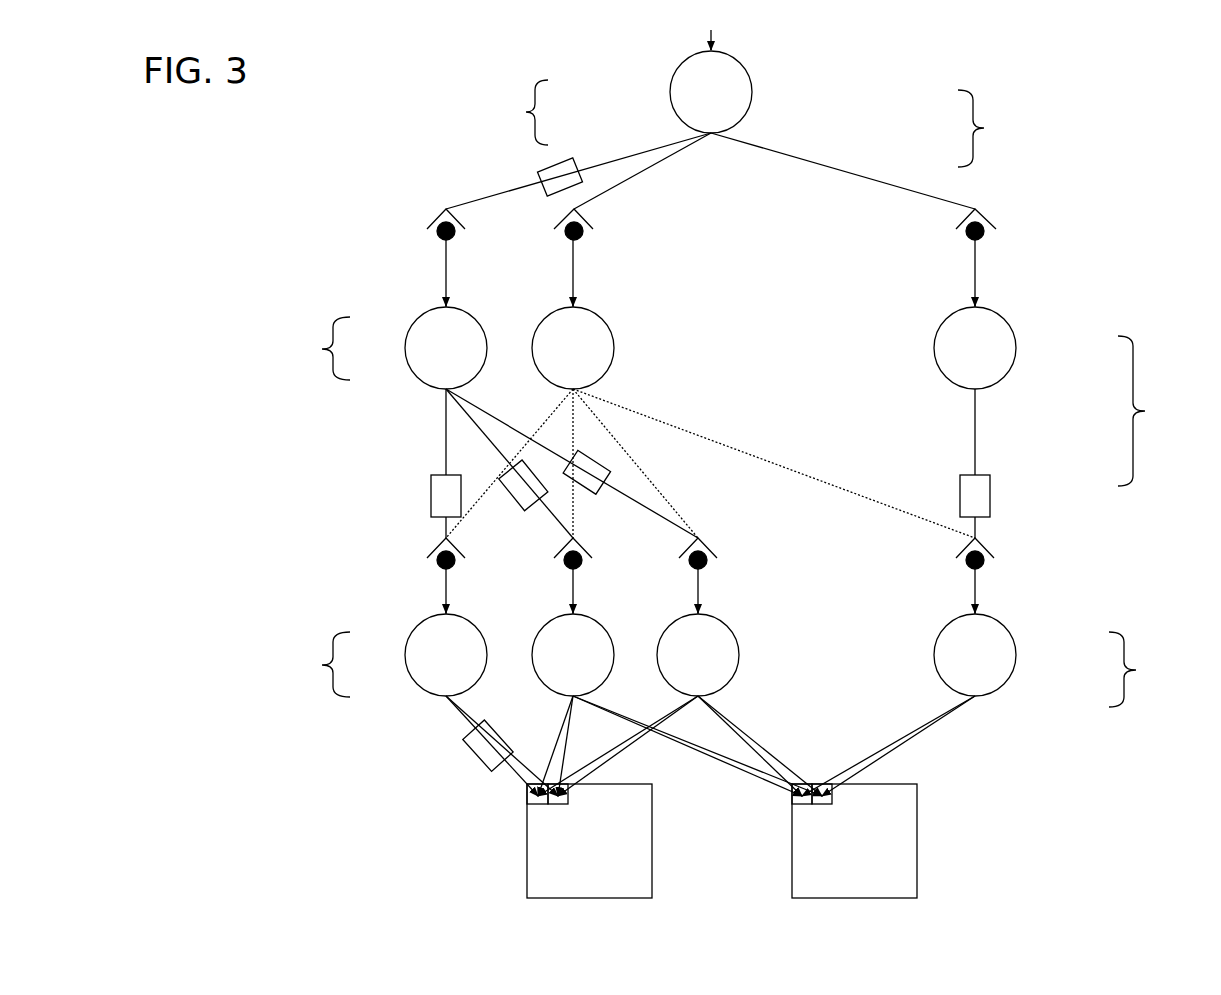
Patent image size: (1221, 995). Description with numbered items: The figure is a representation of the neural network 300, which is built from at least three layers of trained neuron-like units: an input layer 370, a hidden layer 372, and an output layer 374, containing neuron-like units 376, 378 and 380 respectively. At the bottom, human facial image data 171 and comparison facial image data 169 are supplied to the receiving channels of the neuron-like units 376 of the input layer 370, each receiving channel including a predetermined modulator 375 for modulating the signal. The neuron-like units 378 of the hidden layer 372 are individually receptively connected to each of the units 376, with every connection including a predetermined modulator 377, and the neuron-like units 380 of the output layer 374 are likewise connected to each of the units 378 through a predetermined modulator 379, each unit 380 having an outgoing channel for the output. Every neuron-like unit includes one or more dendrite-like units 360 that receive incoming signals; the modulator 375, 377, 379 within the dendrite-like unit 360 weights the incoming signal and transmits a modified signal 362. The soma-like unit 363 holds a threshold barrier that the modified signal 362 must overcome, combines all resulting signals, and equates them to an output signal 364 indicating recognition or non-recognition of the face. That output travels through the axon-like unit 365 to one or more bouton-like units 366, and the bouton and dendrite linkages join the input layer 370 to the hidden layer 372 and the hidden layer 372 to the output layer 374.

The neural network 300 is at (924, 58).
The comparison facial image data 169 is at (919, 847).
The human facial image data 171 is at (526, 847).
The dendrite-like unit 360 is at (432, 222).
The modified signal 362 is at (712, 136).
The soma-like unit 363 is at (754, 80).
The output signal 364 is at (718, 52).
The axon-like unit 365 is at (998, 594).
The bouton-like unit 366 is at (560, 241).
The input layer 370 is at (1138, 670).
The hidden layer 372 is at (1147, 411).
The output layer 374 is at (986, 128).
The modulator 375 is at (481, 762).
The neuron-like unit 376 is at (320, 665).
The modulator 377 is at (430, 494).
The neuron-like unit 378 is at (320, 349).
The modulator 379 is at (548, 181).
The neuron-like unit 380 is at (524, 112).